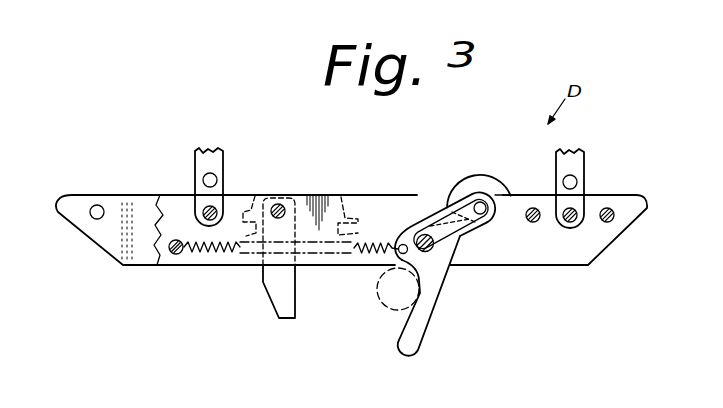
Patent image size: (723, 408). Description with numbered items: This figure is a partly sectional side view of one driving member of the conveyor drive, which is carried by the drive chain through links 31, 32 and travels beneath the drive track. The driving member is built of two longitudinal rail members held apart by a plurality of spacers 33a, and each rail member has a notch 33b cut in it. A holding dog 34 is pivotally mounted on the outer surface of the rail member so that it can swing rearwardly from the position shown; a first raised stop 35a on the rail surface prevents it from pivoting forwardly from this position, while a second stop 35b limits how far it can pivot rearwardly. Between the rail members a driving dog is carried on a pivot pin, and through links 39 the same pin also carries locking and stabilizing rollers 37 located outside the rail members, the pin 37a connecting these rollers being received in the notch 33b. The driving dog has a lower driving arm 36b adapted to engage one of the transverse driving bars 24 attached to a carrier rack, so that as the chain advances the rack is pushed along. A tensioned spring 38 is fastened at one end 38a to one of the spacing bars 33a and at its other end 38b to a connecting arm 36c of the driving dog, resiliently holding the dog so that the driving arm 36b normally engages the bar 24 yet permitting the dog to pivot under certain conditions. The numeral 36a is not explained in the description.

The transverse driving bar 24 is at (378, 302).
The link 31 is at (224, 157).
The link 32 is at (225, 194).
The spacer 33a is at (97, 205).
The notch 33b is at (500, 195).
The holding dog 34 is at (280, 297).
The first raised stop 35a is at (255, 196).
The second stop 35b is at (341, 195).
The lever screw 36a is at (425, 234).
The lower driving arm 36b is at (423, 322).
The connecting arm 36c is at (400, 244).
The locking and stabilizing roller 37 is at (468, 176).
The pin 37a is at (483, 201).
The tensioned spring 38 is at (320, 255).
The spring end 38a is at (180, 252).
The spring end 38b is at (388, 257).
The link 39 is at (440, 209).